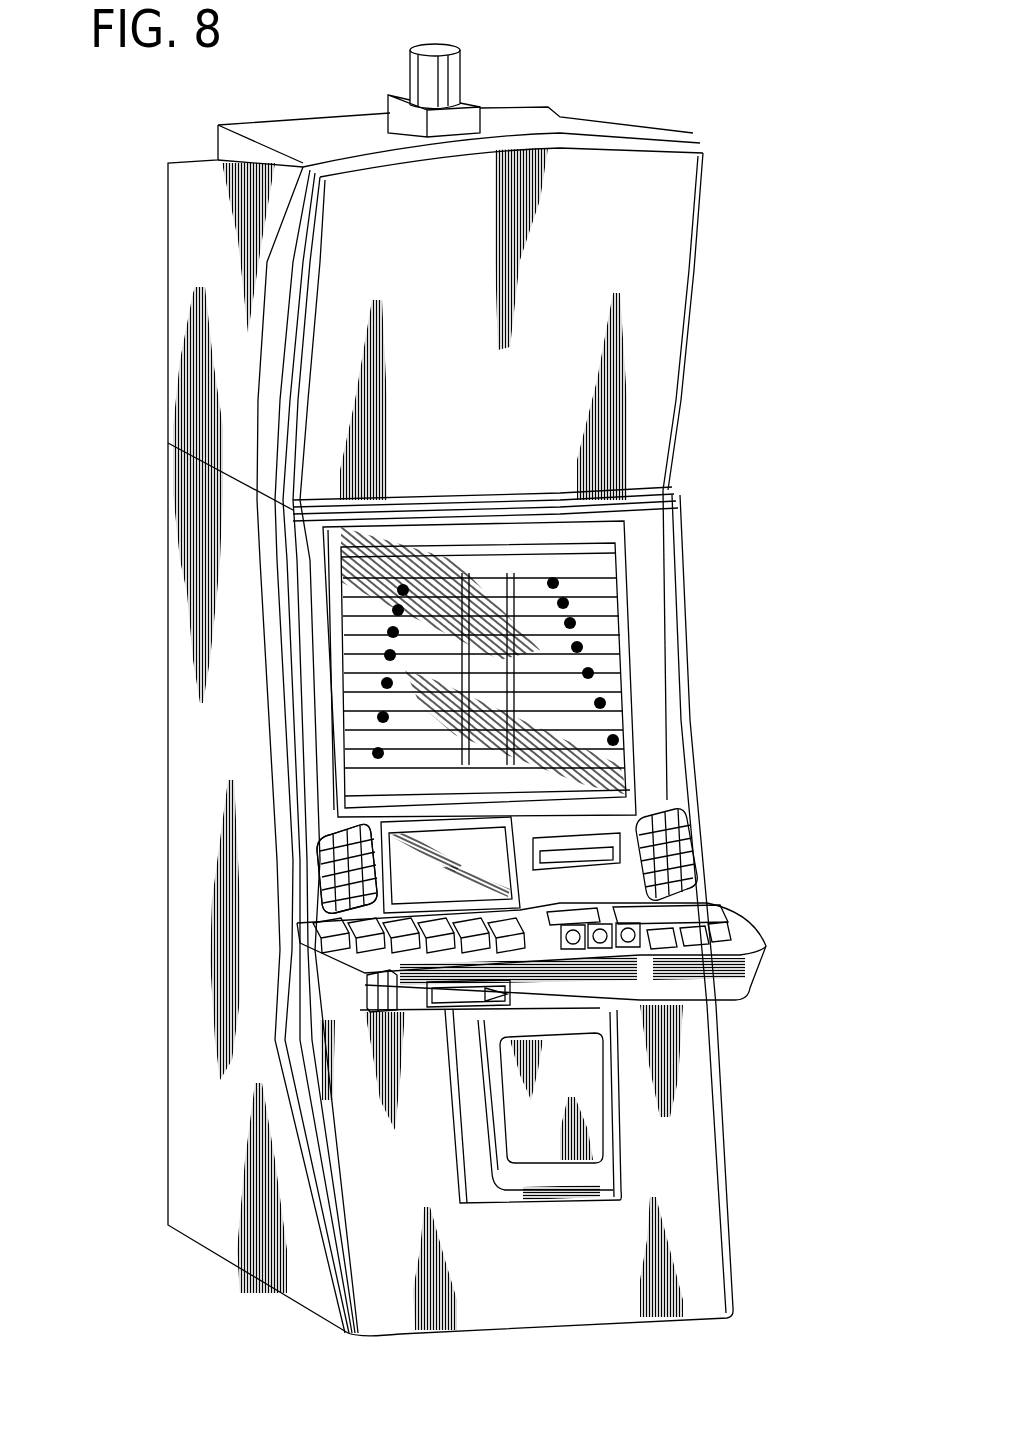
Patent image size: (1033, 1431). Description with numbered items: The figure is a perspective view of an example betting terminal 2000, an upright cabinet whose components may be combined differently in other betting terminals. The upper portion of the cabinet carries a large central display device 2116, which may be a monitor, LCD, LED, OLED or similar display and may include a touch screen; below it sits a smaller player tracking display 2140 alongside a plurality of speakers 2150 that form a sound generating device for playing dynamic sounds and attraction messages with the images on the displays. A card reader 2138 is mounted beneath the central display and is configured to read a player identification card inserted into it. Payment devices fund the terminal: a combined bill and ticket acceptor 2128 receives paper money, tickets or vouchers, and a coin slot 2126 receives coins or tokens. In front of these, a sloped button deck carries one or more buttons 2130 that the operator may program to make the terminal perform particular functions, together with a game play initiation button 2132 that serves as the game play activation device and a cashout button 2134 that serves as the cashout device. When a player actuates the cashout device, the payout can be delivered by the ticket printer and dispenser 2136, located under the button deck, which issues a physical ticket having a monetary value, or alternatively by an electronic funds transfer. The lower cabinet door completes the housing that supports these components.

The betting terminal 2000 is at (700, 80).
The central display device 2116 is at (583, 527).
The coin slot 2126 is at (577, 907).
The combined bill and ticket acceptor 2128 is at (660, 906).
The buttons 2130 is at (320, 938).
The game play initiation button 2132 is at (745, 953).
The cashout button 2134 is at (752, 992).
The ticket printer and dispenser 2136 is at (370, 978).
The card reader 2138 is at (576, 843).
The player tracking display 2140 is at (333, 840).
The speakers 2150 is at (690, 822).